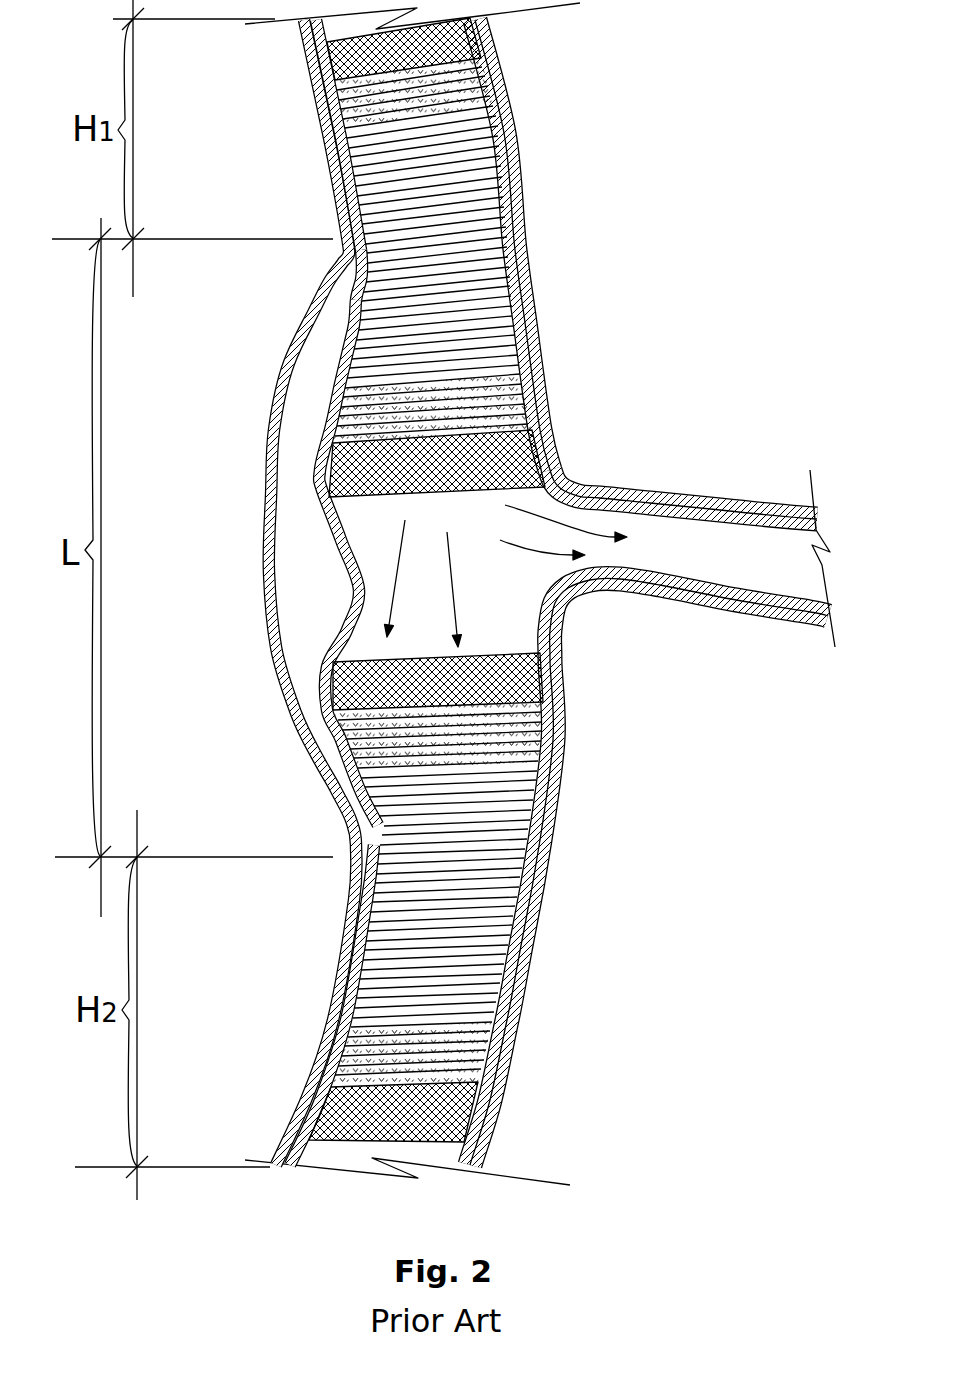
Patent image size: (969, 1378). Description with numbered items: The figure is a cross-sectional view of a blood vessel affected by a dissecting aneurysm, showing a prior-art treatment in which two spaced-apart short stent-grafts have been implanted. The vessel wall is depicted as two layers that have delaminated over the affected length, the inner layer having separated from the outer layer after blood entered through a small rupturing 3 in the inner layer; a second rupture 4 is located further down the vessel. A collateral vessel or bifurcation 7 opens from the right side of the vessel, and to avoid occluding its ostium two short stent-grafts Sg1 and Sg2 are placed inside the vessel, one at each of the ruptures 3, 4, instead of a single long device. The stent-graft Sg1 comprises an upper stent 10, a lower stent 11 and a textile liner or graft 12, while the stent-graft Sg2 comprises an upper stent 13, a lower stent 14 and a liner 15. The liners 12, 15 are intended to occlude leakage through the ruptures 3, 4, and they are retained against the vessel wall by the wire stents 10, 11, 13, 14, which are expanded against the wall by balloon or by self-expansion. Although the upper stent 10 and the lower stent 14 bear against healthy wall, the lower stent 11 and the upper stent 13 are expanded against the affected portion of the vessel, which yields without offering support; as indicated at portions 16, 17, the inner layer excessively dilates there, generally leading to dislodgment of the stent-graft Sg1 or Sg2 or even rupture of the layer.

The rupturing 3 is at (355, 265).
The rupture 4 is at (378, 830).
The collateral vessel or bifurcation 7 is at (602, 615).
The upper stent 10 is at (457, 53).
The lower stent 11 is at (503, 470).
The textile liner 12 is at (430, 300).
The upper stent 13 is at (546, 716).
The lower stent 14 is at (478, 1105).
The liner 15 is at (470, 953).
The portion 16 is at (314, 472).
The portion 17 is at (322, 664).
The stent-graft Sg1 is at (515, 257).
The stent-graft Sg2 is at (507, 899).